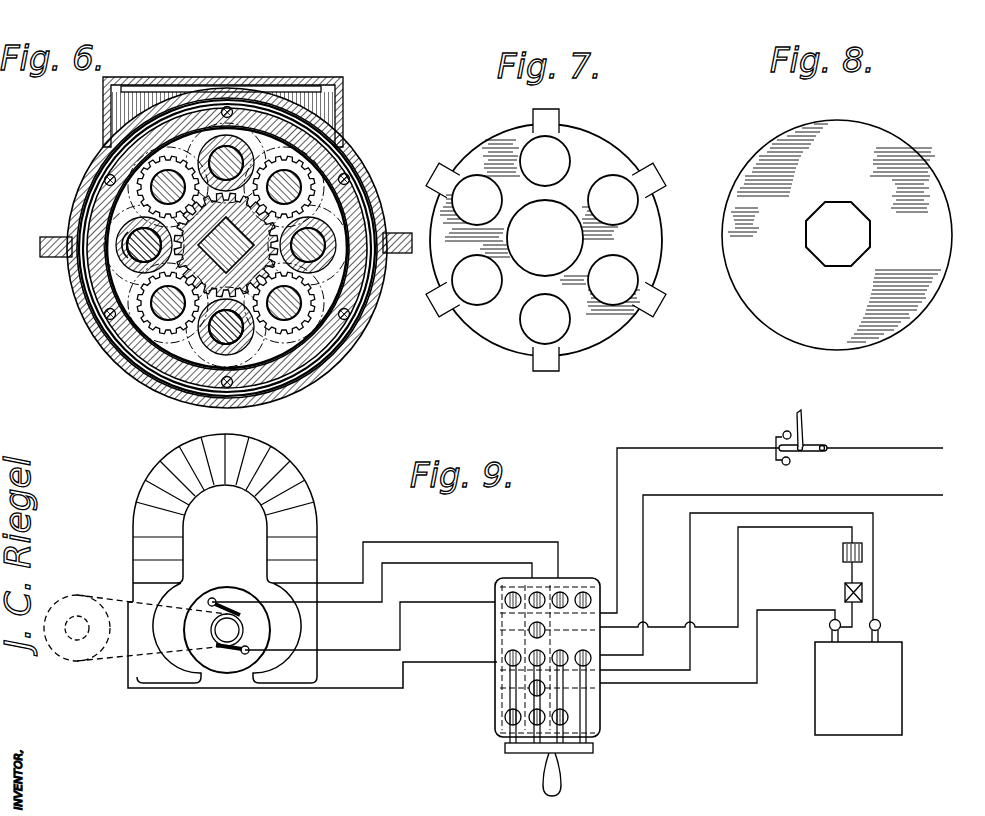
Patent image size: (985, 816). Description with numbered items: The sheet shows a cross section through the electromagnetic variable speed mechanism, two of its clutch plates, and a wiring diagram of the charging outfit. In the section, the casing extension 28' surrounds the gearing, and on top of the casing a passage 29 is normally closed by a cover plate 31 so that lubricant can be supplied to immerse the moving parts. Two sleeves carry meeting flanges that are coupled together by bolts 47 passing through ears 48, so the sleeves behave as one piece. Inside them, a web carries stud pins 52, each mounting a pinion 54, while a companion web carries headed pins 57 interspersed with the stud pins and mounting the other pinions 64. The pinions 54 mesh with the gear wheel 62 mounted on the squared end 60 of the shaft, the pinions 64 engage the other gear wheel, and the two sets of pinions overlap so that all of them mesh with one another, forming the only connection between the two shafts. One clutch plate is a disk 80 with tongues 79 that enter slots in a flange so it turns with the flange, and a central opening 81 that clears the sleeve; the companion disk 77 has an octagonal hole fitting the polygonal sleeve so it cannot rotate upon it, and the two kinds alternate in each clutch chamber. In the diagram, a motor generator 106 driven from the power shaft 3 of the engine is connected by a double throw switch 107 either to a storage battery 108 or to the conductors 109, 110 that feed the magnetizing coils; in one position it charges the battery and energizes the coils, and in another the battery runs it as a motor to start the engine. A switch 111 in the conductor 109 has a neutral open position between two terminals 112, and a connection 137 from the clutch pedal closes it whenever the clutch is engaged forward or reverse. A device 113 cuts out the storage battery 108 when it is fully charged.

In FIG. 6, the passage 29 is at (190, 92).
In FIG. 6, the cover plate 31 is at (245, 78).
In FIG. 6, the stud pin 52 is at (245, 137).
In FIG. 6, the headed pin 57 is at (148, 315).
In FIG. 6, the ear 48 is at (82, 313).
In FIG. 6, the squared end 60 is at (290, 210).
In FIG. 6, the pinion 54 is at (133, 232).
In FIG. 6, the gear wheel 62 is at (133, 260).
In FIG. 6, the pinion 64 is at (110, 145).
In FIG. 6, the bolt 47 is at (100, 173).
In FIG. 6, the casing extension 28' is at (246, 248).
In FIG. 7, the tongue 79 is at (650, 173).
In FIG. 7, the disk 80 is at (600, 153).
In FIG. 7, the central opening 81 is at (545, 238).
In FIG. 8, the disk 77 is at (918, 158).
In FIG. 9, the motor generator 106 is at (125, 522).
In FIG. 9, the power shaft 3 is at (77, 628).
In FIG. 9, the double throw switch 107 is at (495, 683).
In FIG. 9, the storage battery 108 is at (751, 624).
In FIG. 9, the conductor 109 is at (919, 436).
In FIG. 9, the conductor 110 is at (919, 484).
In FIG. 9, the switch 111 is at (813, 443).
In FIG. 9, the terminal 112 is at (784, 430).
In FIG. 9, the device 113 is at (863, 590).
In FIG. 9, the connection 137 is at (805, 412).